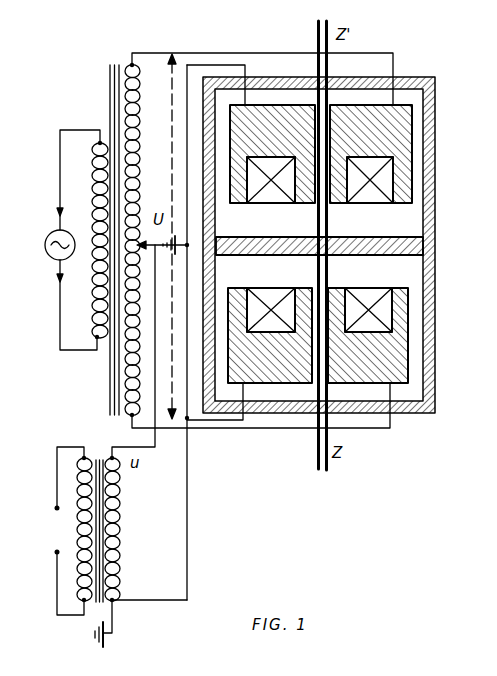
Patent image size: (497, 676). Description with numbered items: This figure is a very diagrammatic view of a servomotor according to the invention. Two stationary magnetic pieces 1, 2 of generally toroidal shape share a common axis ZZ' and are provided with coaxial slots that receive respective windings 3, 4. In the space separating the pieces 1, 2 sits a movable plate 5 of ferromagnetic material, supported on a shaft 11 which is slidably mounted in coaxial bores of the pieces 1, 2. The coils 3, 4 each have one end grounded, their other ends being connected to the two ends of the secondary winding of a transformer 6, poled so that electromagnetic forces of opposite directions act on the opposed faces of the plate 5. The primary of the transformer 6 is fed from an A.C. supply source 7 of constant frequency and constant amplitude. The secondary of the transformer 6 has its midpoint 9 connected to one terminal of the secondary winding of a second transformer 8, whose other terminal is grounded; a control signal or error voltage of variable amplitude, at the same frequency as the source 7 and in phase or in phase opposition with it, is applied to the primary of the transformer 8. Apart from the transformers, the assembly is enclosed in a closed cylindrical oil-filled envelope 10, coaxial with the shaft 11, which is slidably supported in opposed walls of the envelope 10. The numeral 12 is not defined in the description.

The stationary magnetic piece 1 is at (287, 107).
The stationary magnetic piece 2 is at (240, 289).
The winding 3 is at (363, 203).
The winding 4 is at (362, 293).
The movable plate 5 is at (395, 250).
The transformer 6 is at (108, 384).
The A.C. supply source 7 is at (54, 231).
The transformer 8 is at (97, 454).
The midpoint 9 is at (142, 243).
The envelope 10 is at (202, 173).
The shaft 11 is at (316, 218).
The coil winding 12 is at (258, 222).